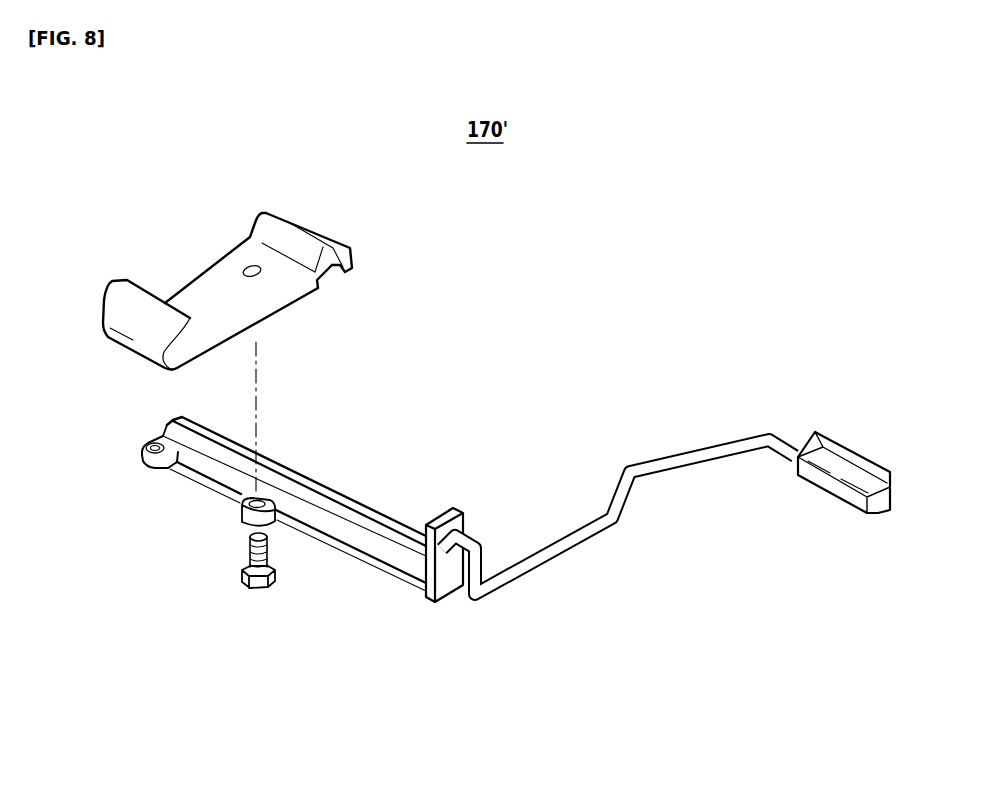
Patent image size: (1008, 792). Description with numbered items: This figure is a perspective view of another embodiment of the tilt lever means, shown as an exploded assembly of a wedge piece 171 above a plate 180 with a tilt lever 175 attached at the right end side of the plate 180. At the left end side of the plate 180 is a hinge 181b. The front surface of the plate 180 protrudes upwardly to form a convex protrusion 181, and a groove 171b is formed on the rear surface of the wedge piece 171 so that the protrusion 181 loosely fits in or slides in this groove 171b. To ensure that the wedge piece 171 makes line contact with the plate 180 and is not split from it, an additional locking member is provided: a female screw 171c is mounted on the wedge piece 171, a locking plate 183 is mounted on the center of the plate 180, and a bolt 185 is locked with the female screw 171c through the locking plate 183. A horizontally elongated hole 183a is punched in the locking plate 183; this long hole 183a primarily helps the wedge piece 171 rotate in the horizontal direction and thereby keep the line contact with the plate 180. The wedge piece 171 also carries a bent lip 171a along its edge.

The wedge piece 171 is at (266, 210).
The clip bent lip 171a is at (278, 215).
The groove 171b is at (332, 281).
The female screw 171c is at (253, 265).
The tilt lever 175 is at (567, 542).
The plate 180 is at (353, 566).
The convex protrusion 181 is at (340, 518).
The hinge 181b is at (142, 460).
The locking plate 183 is at (250, 522).
The horizontally elongated hole 183a is at (246, 500).
The bolt 185 is at (255, 590).